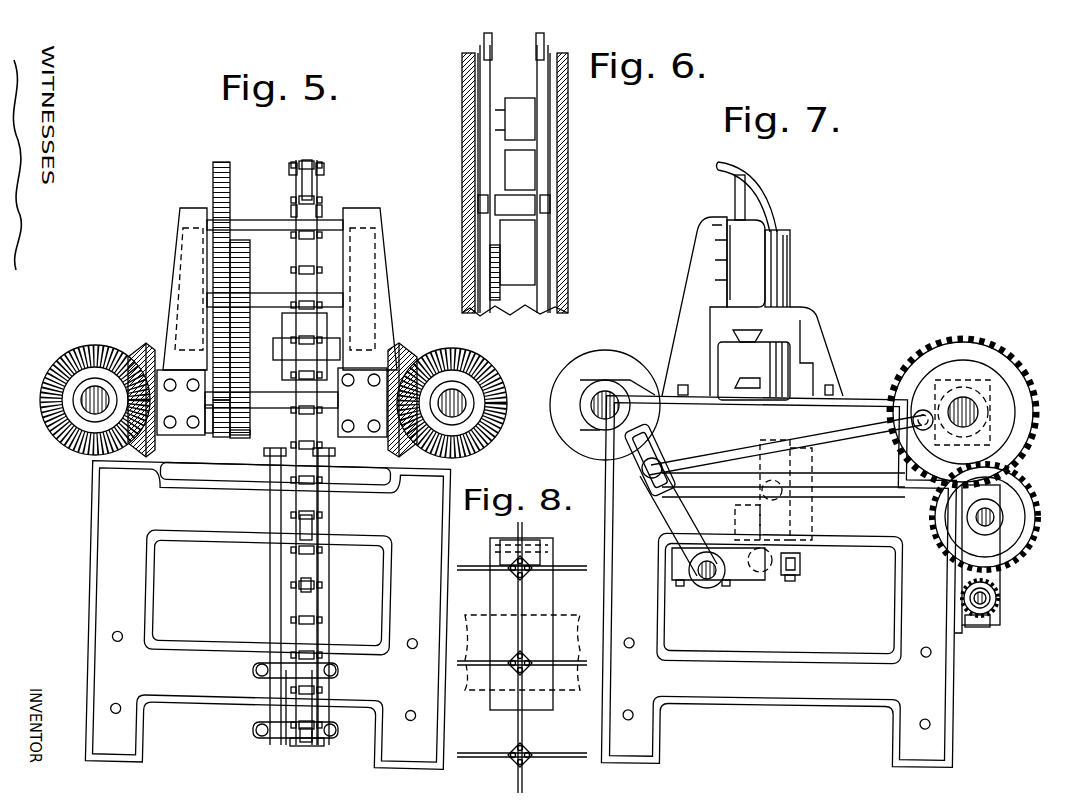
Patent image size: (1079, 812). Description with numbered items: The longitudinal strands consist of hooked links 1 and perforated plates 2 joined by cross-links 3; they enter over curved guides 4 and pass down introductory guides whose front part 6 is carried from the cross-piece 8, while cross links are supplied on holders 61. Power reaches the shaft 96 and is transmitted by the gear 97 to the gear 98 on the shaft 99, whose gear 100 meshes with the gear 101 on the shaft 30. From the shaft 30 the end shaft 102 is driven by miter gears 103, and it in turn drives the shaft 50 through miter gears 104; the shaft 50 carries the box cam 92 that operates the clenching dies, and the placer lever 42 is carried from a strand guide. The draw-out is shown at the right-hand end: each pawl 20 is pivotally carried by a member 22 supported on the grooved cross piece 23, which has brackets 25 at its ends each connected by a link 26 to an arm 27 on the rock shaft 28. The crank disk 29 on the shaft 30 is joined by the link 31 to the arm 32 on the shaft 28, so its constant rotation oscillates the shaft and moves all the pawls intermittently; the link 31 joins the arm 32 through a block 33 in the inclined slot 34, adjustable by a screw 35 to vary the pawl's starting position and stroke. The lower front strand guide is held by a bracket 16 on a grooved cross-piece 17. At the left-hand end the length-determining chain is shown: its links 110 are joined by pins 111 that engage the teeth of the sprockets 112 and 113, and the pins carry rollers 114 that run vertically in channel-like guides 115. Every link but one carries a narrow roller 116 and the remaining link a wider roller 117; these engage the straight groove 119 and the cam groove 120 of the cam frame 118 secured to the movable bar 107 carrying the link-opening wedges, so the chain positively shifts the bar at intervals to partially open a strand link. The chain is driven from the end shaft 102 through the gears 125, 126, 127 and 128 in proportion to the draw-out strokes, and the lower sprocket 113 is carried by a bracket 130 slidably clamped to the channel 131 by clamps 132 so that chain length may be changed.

In FIG. 8, the hooked links 1 is at (530, 532).
In FIG. 8, the perforated plates 2 is at (510, 575).
In FIG. 8, the cross-links 3 is at (480, 760).
In FIG. 7, the curved guides 4 is at (770, 187).
In FIG. 7, the front part of introductory guide 6 is at (782, 221).
In FIG. 7, the cross-piece 8 is at (740, 228).
In FIG. 7, the bracket 16 is at (800, 565).
In FIG. 7, the grooved cross-piece 17 is at (790, 578).
In FIG. 8, the pawl 20 is at (505, 560).
In FIG. 8, the member 22 is at (553, 591).
In FIG. 7, the grooved cross piece 23 is at (814, 463).
In FIG. 8, the grooved cross piece 23 is at (578, 690).
In FIG. 7, the brackets 25 is at (780, 445).
In FIG. 7, the link 26 is at (738, 510).
In FIG. 7, the arm 27 is at (745, 570).
In FIG. 7, the shaft 28 is at (707, 588).
In FIG. 7, the crank disk 29 is at (948, 360).
In FIG. 5, the shaft 30 is at (90, 395).
In FIG. 7, the shaft 30 is at (968, 405).
In FIG. 7, the link 31 is at (742, 452).
In FIG. 7, the arm 32 is at (666, 512).
In FIG. 7, the block 33 is at (642, 468).
In FIG. 7, the inclined slot 34 is at (652, 438).
In FIG. 7, the screw 35 is at (664, 448).
In FIG. 7, the lever 42 is at (745, 385).
In FIG. 5, the shaft 50 is at (458, 398).
In FIG. 7, the shaft 50 is at (608, 400).
In FIG. 7, the guides or holders 61 is at (785, 266).
In FIG. 7, the cam 92 is at (580, 360).
In FIG. 7, the shaft 96 is at (975, 626).
In FIG. 7, the gear 97 is at (998, 600).
In FIG. 7, the gear 98 is at (1023, 550).
In FIG. 7, the shaft 99 is at (976, 520).
In FIG. 7, the gear 100 is at (1012, 500).
In FIG. 7, the gear 101 is at (912, 372).
In FIG. 5, the end shaft 102 is at (262, 410).
In FIG. 5, the miter gears 103 is at (148, 346).
In FIG. 5, the miter gears 104 is at (412, 350).
In FIG. 7, the grooved cross bar 107 is at (752, 338).
In FIG. 5, the chain links 110 is at (322, 212).
In FIG. 6, the chain links 110 is at (492, 86).
In FIG. 5, the pins 111 is at (309, 160).
In FIG. 6, the pins 111 is at (522, 210).
In FIG. 5, the sprocket 112 is at (300, 212).
In FIG. 5, the sprocket 113 is at (322, 722).
In FIG. 5, the rollers 114 is at (291, 165).
In FIG. 6, the rollers 114 is at (484, 46).
In FIG. 6, the guides 115 is at (483, 178).
In FIG. 5, the narrow roller 116 is at (300, 585).
In FIG. 6, the narrow roller 116 is at (494, 262).
In FIG. 5, the wider roller 117 is at (306, 535).
In FIG. 6, the wider roller 117 is at (530, 119).
In FIG. 5, the cam-like box or frame 118 is at (320, 346).
In FIG. 6, the groove 119 is at (502, 172).
In FIG. 6, the cam groove 120 is at (528, 235).
In FIG. 5, the gear 125 is at (236, 440).
In FIG. 5, the gear 126 is at (250, 274).
In FIG. 5, the gear 127 is at (213, 306).
In FIG. 5, the gear 128 is at (213, 178).
In FIG. 5, the bracket 130 is at (272, 712).
In FIG. 5, the channel 131 is at (275, 626).
In FIG. 5, the clamps 132 is at (255, 670).